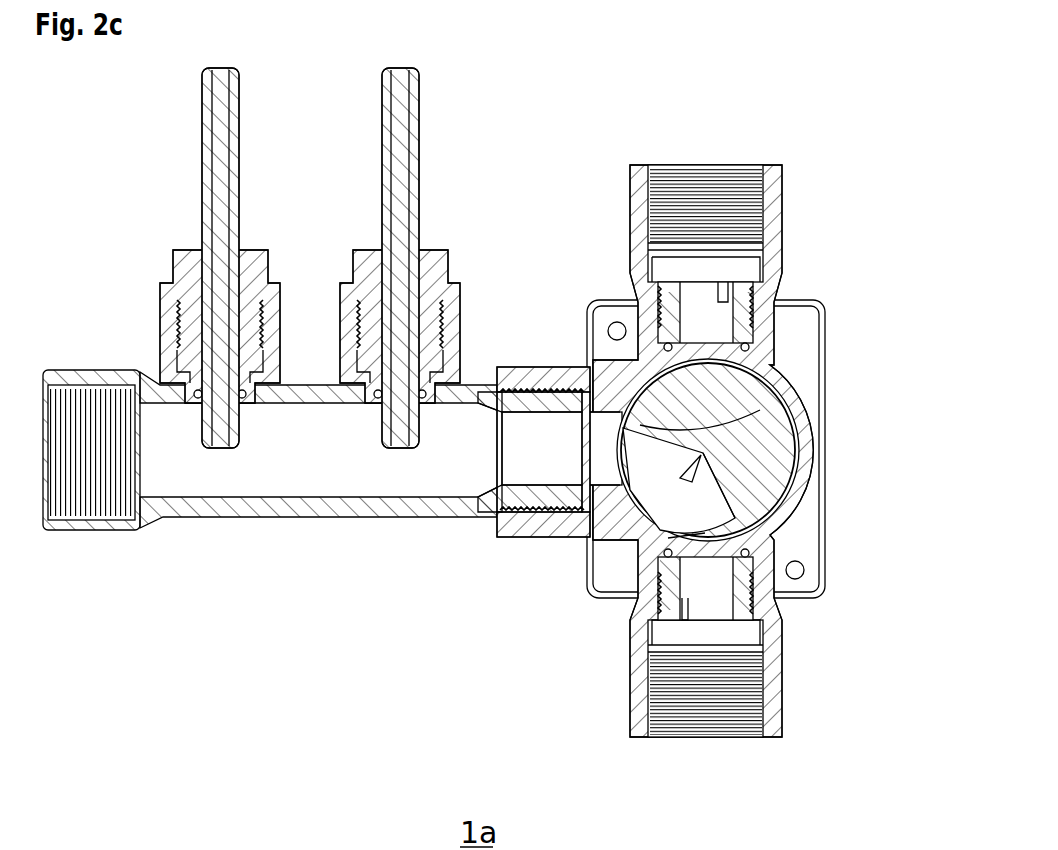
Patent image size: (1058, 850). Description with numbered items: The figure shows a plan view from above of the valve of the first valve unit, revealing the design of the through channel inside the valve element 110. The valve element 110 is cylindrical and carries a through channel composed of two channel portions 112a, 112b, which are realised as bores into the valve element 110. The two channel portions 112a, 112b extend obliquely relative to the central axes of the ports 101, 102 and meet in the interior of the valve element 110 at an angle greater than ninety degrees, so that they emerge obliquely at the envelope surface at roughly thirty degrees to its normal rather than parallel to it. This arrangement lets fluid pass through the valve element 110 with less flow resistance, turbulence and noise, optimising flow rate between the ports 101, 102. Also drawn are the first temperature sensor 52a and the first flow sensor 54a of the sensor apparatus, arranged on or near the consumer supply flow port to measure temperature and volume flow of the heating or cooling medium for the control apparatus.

The port 101 is at (725, 196).
The port 102 is at (737, 687).
The valve element 110 is at (766, 438).
The channel portion 112a is at (643, 428).
The channel portion 112b is at (706, 497).
The first temperature sensor 52a is at (193, 293).
The first flow sensor 54a is at (433, 290).